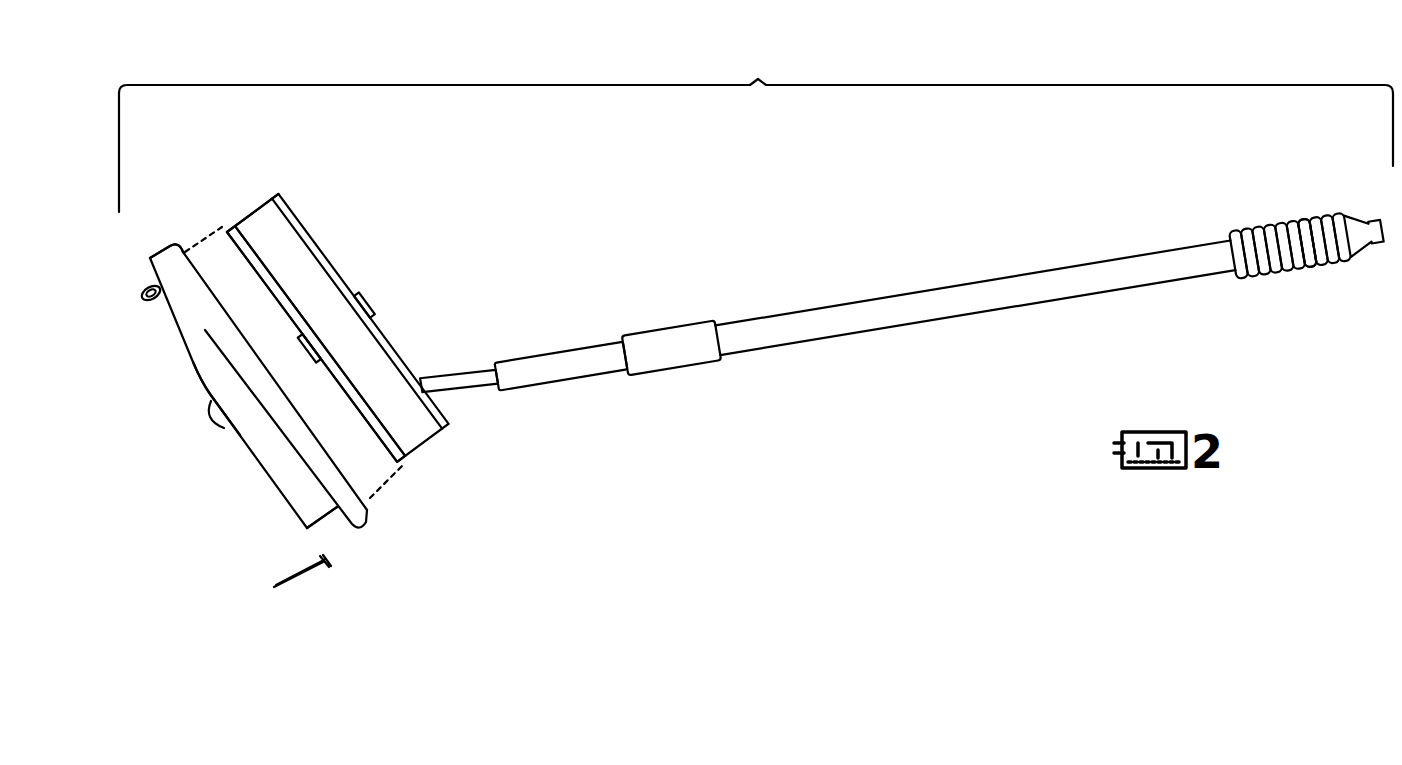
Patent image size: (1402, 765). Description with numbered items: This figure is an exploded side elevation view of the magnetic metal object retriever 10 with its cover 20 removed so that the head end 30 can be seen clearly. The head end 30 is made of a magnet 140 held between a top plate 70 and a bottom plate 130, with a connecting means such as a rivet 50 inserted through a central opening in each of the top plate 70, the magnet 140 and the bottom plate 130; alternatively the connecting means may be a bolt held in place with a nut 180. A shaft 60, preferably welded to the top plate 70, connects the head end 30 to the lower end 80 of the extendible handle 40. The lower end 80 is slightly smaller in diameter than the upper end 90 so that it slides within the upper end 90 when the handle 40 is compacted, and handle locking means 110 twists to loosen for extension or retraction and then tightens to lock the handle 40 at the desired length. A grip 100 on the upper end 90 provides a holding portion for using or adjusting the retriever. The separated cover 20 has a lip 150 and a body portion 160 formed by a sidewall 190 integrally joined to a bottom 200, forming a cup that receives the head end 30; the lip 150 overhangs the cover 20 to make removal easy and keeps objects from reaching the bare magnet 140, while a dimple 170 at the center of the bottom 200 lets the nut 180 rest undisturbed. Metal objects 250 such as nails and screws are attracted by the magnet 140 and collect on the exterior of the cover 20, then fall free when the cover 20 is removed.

The magnetic metal object retriever 10 is at (758, 83).
The cover 20 is at (257, 470).
The head end 30 is at (424, 449).
The extendible handle 40 is at (1018, 312).
The rivet 50 is at (380, 310).
The shaft 60 is at (483, 380).
The top plate 70 is at (312, 227).
The lower end of the handle 80 is at (596, 366).
The upper end of the handle 90 is at (1214, 272).
The grip 100 is at (1319, 258).
The handle locking means 110 is at (712, 352).
The bottom plate 130 is at (236, 252).
The magnet 140 is at (240, 230).
The lip 150 is at (366, 512).
The body portion 160 is at (297, 503).
The dimple 170 is at (218, 424).
The nut 180 is at (297, 352).
The sidewall 190 is at (153, 274).
The bottom 200 is at (190, 364).
The metal objects 250 is at (148, 302).